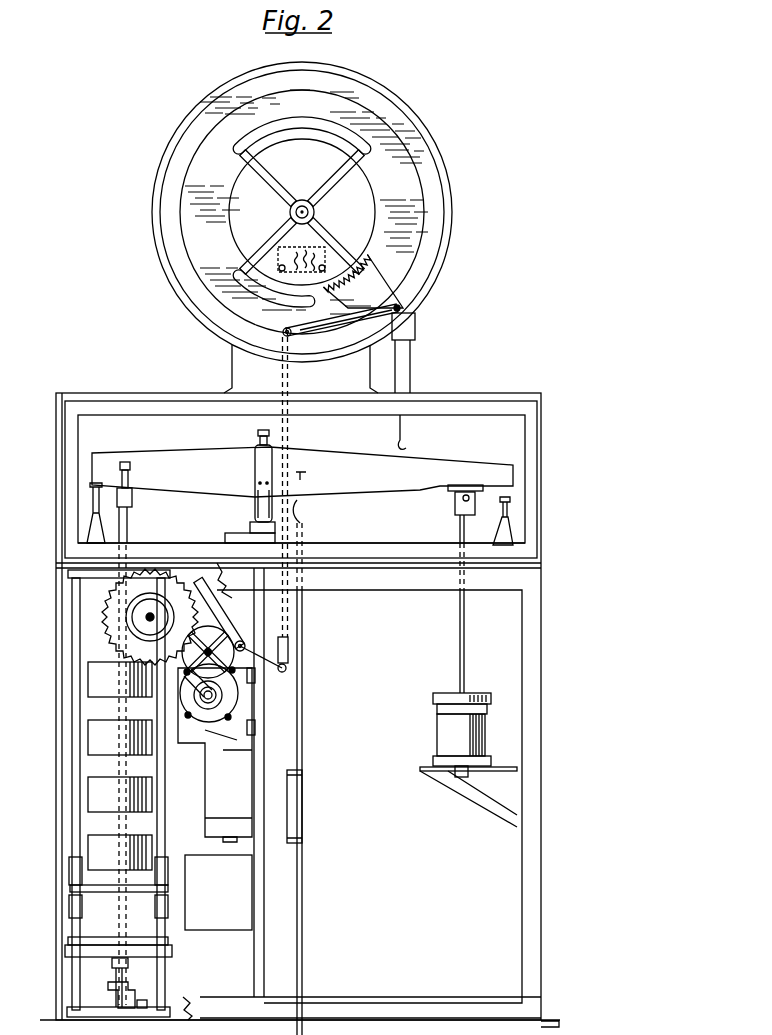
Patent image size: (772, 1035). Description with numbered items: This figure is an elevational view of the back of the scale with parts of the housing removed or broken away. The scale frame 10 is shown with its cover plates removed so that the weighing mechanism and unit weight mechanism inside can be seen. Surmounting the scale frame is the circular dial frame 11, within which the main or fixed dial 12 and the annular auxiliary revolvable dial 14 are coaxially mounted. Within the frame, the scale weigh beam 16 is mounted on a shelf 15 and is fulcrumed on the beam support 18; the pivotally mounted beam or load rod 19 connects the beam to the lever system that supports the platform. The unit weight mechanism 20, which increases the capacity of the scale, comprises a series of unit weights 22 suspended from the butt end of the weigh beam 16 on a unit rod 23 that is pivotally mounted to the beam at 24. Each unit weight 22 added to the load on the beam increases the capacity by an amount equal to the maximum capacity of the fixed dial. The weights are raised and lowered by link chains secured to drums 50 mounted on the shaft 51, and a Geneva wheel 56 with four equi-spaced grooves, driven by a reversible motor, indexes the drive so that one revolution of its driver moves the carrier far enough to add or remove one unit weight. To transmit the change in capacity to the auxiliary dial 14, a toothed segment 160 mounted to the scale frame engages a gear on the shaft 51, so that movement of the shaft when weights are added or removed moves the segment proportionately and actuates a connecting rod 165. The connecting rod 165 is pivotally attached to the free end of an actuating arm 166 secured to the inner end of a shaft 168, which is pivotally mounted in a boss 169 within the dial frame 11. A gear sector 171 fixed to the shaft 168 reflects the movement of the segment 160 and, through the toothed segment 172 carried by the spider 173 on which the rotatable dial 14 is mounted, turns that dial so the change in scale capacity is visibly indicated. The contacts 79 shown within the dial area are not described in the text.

The scale frame 10 is at (545, 577).
The circular dial frame 11 is at (418, 113).
The main dial 12 is at (425, 148).
The annular auxiliary revolvable dial 14 is at (408, 172).
The shelf 15 is at (392, 543).
The scale weigh beam 16 is at (417, 462).
The beam support 18 is at (260, 455).
The beam or load rod 19 is at (300, 703).
The unit weight mechanism 20 is at (65, 800).
The unit weights 22 is at (97, 733).
The unit rod 23 is at (128, 530).
The pivotal mounting 24 is at (132, 497).
The drums 50 is at (122, 627).
The shaft 51 is at (150, 610).
The Geneva wheel 56 is at (250, 648).
The contacts 79 is at (282, 267).
The toothed segment 160 is at (215, 603).
The connecting rod 165 is at (285, 613).
The actuating arm 166 is at (403, 323).
The shaft 168 is at (403, 307).
The boss 169 is at (403, 317).
The gear sector 171 is at (377, 287).
The toothed segment 172 is at (370, 260).
The spider 173 is at (347, 174).